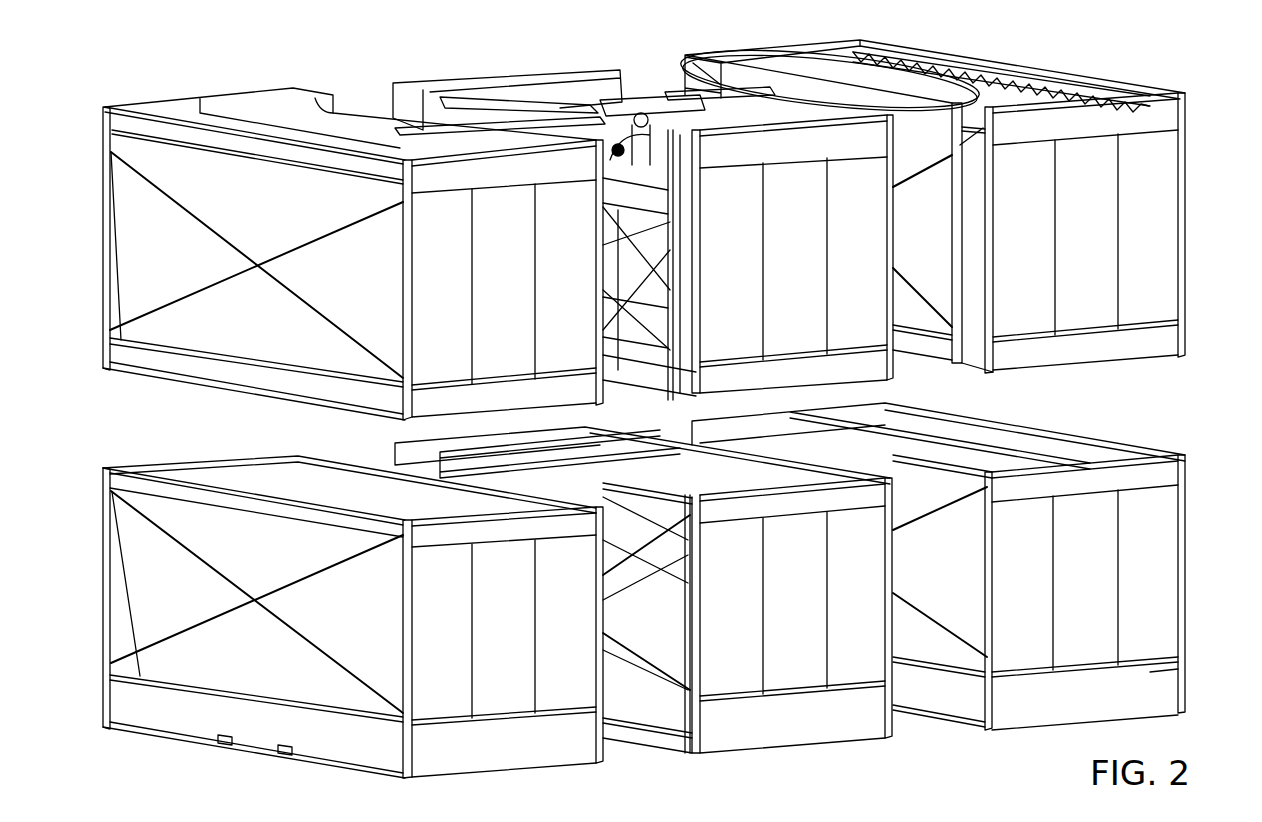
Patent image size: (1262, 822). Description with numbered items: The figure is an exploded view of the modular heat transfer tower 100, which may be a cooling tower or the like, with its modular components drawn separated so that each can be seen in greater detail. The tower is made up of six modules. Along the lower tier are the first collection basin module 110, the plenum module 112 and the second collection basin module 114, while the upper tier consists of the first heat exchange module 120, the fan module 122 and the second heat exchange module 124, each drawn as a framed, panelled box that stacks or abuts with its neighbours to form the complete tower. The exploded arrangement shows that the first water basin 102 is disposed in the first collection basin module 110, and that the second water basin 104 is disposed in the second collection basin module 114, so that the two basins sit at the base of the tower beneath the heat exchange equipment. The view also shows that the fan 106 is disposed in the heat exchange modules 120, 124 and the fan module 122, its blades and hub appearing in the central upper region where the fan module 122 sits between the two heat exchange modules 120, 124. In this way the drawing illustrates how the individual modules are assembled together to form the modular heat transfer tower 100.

The modular heat transfer tower 100 is at (1056, 46).
The first water basin 102 is at (355, 750).
The second water basin 104 is at (1163, 683).
The fan 106 is at (657, 104).
The first collection basin module 110 is at (103, 598).
The plenum module 112 is at (803, 745).
The second collection basin module 114 is at (1185, 598).
The first heat exchange module 120 is at (103, 235).
The fan module 122 is at (541, 74).
The second heat exchange module 124 is at (1185, 233).